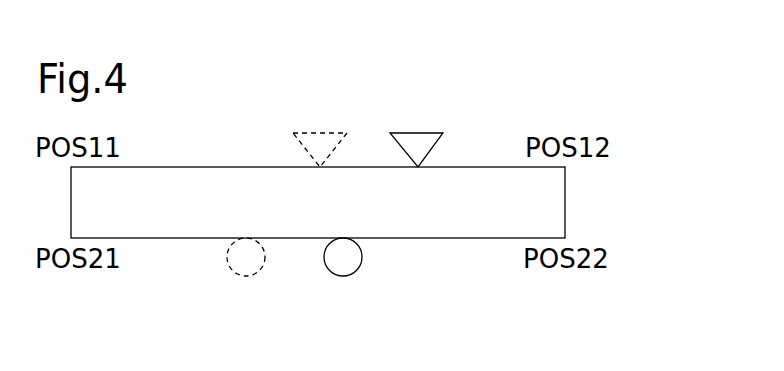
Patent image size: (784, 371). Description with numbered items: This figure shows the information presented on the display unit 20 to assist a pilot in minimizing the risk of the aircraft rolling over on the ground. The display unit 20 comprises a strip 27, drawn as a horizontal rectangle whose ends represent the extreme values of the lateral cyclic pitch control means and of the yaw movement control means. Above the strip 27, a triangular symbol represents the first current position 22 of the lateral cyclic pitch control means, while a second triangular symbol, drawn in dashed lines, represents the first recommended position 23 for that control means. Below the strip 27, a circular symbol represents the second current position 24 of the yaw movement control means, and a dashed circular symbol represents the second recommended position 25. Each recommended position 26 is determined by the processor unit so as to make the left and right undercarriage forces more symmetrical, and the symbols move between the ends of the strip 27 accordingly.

The display unit 20 is at (632, 105).
The first current position 22 is at (427, 132).
The first recommended position 23 is at (327, 132).
The second current position 24 is at (353, 277).
The second recommended position 25 is at (257, 277).
The recommended position 26 is at (270, 133).
The strip 27 is at (565, 197).